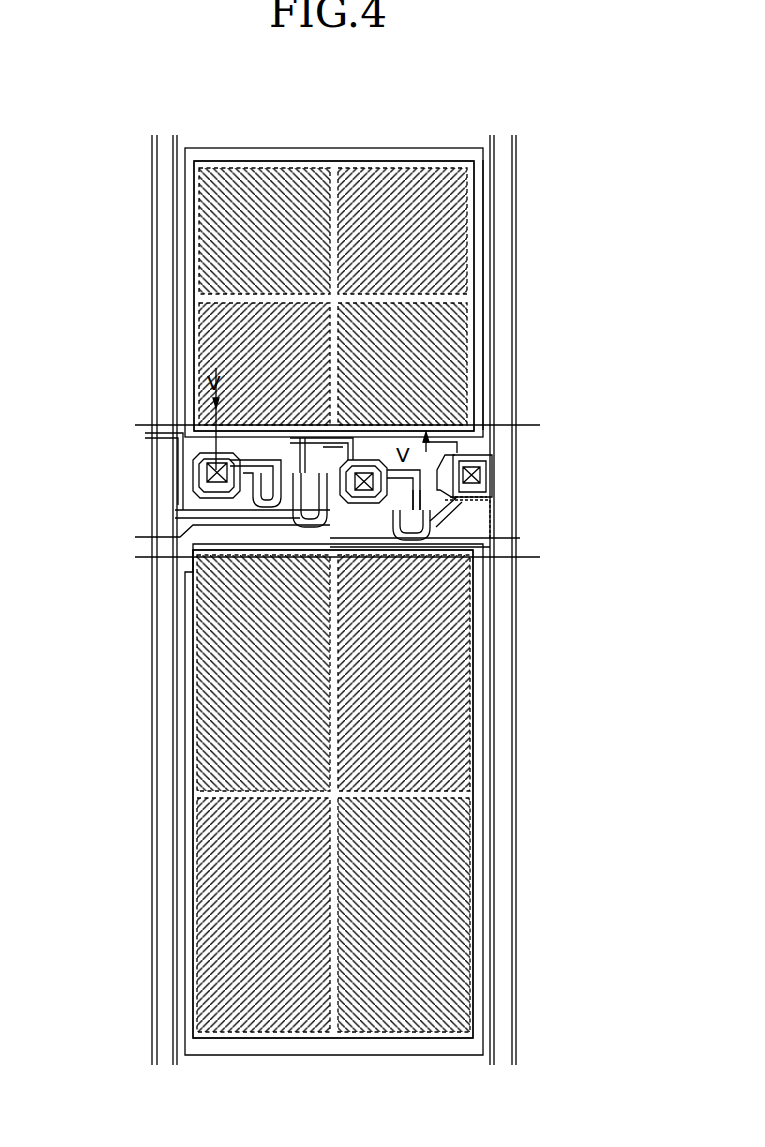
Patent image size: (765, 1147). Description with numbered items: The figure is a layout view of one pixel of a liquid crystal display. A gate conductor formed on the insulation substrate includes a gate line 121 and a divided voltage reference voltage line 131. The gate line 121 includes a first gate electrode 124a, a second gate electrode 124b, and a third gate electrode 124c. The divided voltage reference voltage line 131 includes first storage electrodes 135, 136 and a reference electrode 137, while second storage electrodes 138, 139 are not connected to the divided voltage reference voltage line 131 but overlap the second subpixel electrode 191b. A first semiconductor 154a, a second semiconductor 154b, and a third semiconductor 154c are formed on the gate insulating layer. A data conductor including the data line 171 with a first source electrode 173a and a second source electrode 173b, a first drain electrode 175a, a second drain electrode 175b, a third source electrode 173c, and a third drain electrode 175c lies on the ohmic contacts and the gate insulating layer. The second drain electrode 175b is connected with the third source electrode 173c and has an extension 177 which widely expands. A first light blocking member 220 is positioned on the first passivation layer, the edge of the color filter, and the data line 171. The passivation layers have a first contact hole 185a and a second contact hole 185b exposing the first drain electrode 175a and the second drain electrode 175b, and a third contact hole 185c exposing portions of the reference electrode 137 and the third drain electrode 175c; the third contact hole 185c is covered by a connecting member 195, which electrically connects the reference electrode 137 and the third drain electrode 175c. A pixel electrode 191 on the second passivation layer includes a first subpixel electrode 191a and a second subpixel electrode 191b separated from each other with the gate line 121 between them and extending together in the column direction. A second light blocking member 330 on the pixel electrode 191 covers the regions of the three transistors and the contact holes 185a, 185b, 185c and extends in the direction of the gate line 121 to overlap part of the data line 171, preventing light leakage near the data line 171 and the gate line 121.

The gate line 121 is at (135, 537).
The first gate electrode 124a is at (195, 452).
The second gate electrode 124b is at (330, 447).
The third gate electrode 124c is at (468, 500).
The divided voltage reference voltage line 131 is at (500, 458).
The first storage electrode 135 is at (484, 315).
The first storage electrode 136 is at (248, 148).
The reference electrode 137 is at (497, 470).
The second storage electrode 138 is at (517, 868).
The second storage electrode 139 is at (425, 1056).
The first semiconductor 154a is at (252, 468).
The second semiconductor 154b is at (342, 470).
The third semiconductor 154c is at (400, 537).
The data line 171 is at (172, 179).
The first source electrode 173a is at (258, 492).
The second source electrode 173b is at (298, 516).
The third source electrode 173c is at (462, 505).
The first drain electrode 175a is at (180, 452).
The second drain electrode 175b is at (305, 527).
The third drain electrode 175c is at (425, 520).
The extension 177 is at (418, 458).
The first contact hole 185a is at (207, 473).
The second contact hole 185b is at (375, 468).
The third contact hole 185c is at (486, 475).
The pixel electrode 191 is at (603, 987).
The first subpixel electrode 191a is at (192, 273).
The second subpixel electrode 191b is at (192, 714).
The connecting member 195 is at (500, 500).
The first light blocking member 220 is at (517, 240).
The second light blocking member 330 is at (540, 412).